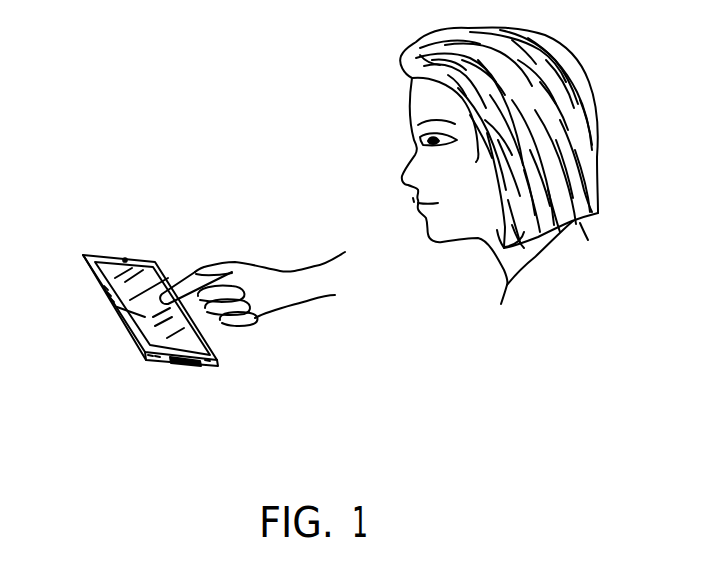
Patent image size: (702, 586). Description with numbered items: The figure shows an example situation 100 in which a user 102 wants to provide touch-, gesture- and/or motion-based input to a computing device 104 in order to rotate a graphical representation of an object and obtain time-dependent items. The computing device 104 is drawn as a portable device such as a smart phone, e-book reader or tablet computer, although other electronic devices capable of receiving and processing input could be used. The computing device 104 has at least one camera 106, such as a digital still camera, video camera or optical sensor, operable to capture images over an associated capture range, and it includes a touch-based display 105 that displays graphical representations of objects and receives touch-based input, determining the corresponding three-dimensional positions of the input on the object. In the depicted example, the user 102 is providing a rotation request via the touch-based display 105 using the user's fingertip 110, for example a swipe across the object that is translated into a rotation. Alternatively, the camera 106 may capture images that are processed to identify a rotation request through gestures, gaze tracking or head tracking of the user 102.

The example situation 100 is at (133, 117).
The user 102 is at (367, 81).
The computing device 104 is at (208, 368).
The touch-based display 105 is at (114, 306).
The camera 106 is at (125, 259).
The fingertip 110 is at (172, 294).